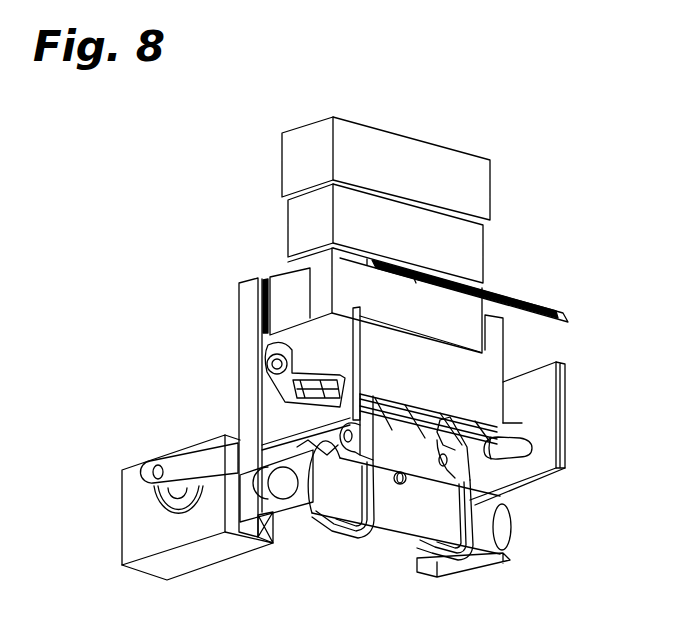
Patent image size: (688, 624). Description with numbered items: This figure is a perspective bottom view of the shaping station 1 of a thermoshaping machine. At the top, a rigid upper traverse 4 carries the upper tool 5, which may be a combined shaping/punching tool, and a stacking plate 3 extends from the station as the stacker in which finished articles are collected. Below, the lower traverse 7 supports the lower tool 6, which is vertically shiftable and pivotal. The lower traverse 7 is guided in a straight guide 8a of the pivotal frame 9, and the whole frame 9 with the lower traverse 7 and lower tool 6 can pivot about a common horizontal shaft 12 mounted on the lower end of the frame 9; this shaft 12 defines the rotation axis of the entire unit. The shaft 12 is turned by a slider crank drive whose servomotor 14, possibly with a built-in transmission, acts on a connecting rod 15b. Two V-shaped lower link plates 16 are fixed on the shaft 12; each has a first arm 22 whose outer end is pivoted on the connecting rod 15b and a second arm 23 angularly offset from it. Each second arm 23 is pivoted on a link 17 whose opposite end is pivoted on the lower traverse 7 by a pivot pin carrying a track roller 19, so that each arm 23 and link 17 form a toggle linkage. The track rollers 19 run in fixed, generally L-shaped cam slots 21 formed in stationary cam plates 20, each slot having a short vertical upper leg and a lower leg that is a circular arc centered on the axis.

The shaping station 1 is at (520, 147).
The stacking plate 3 is at (538, 304).
The upper traverse 4 is at (302, 160).
The upper tool 5 is at (304, 226).
The lower tool 6 is at (350, 288).
The lower traverse 7 is at (470, 364).
The straight guide 8a is at (262, 320).
The pivotal frame 9 is at (495, 327).
The horizontal shaft 12 is at (388, 517).
The servomotor 14 is at (143, 535).
The connecting rod 15b is at (182, 466).
The lower link plates 16 is at (330, 527).
The links 17 is at (418, 412).
The track rollers 19 is at (268, 380).
The cam plates 20 is at (272, 424).
The cam slots 21 is at (567, 460).
The first arms 22 is at (405, 485).
The second arms 23 is at (447, 473).